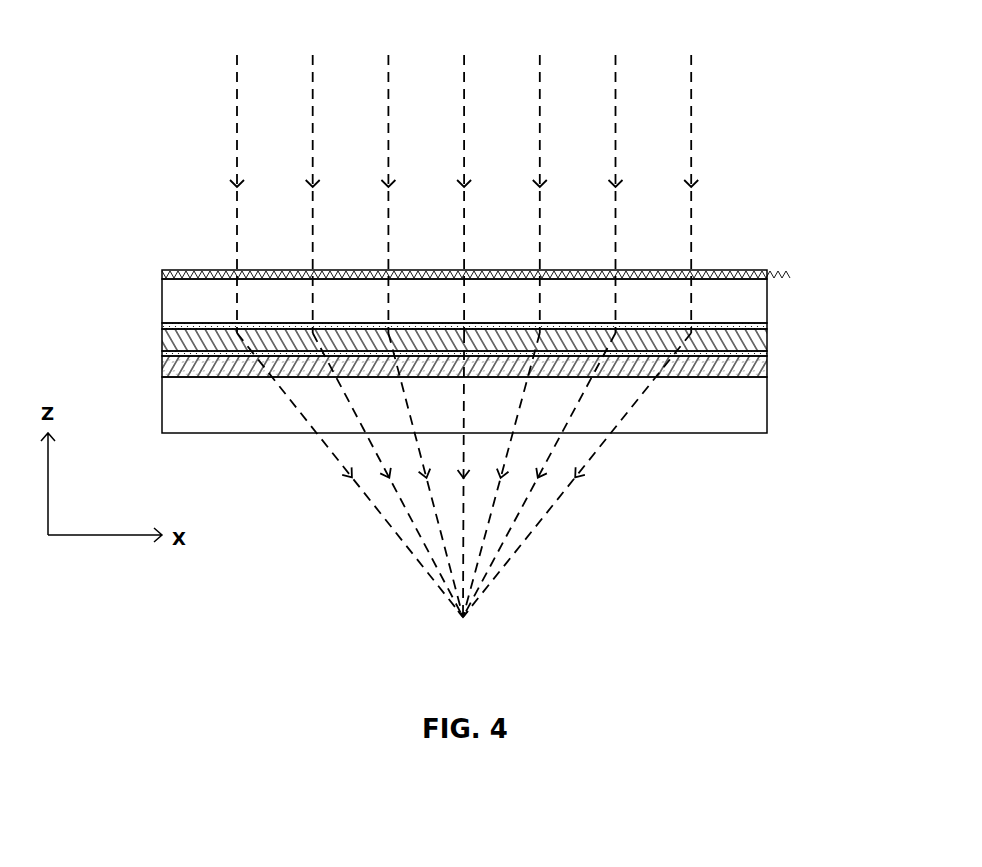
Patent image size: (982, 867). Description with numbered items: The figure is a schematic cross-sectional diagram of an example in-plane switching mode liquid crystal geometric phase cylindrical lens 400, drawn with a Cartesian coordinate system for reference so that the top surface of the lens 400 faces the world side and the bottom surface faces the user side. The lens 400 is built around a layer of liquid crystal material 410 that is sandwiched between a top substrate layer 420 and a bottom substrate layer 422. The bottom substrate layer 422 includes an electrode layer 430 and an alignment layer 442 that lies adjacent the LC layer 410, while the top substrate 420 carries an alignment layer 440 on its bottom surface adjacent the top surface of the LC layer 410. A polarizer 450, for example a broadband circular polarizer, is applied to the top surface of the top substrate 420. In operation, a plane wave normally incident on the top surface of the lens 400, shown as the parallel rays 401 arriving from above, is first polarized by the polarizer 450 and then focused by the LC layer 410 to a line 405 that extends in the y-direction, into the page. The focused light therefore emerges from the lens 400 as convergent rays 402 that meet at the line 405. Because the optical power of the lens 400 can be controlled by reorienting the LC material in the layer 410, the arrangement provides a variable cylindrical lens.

The IPS mode LC GP cylindrical lens 400 is at (967, 155).
The rays 401 is at (692, 103).
The convergent rays 402 is at (556, 505).
The line 405 is at (465, 620).
The layer of liquid crystal material 410 is at (767, 340).
The top substrate layer 420 is at (767, 305).
The bottom substrate layer 422 is at (767, 417).
The electrode layer 430 is at (767, 367).
The alignment layer 440 is at (767, 323).
The alignment layer 442 is at (767, 352).
The polarizer 450 is at (767, 270).